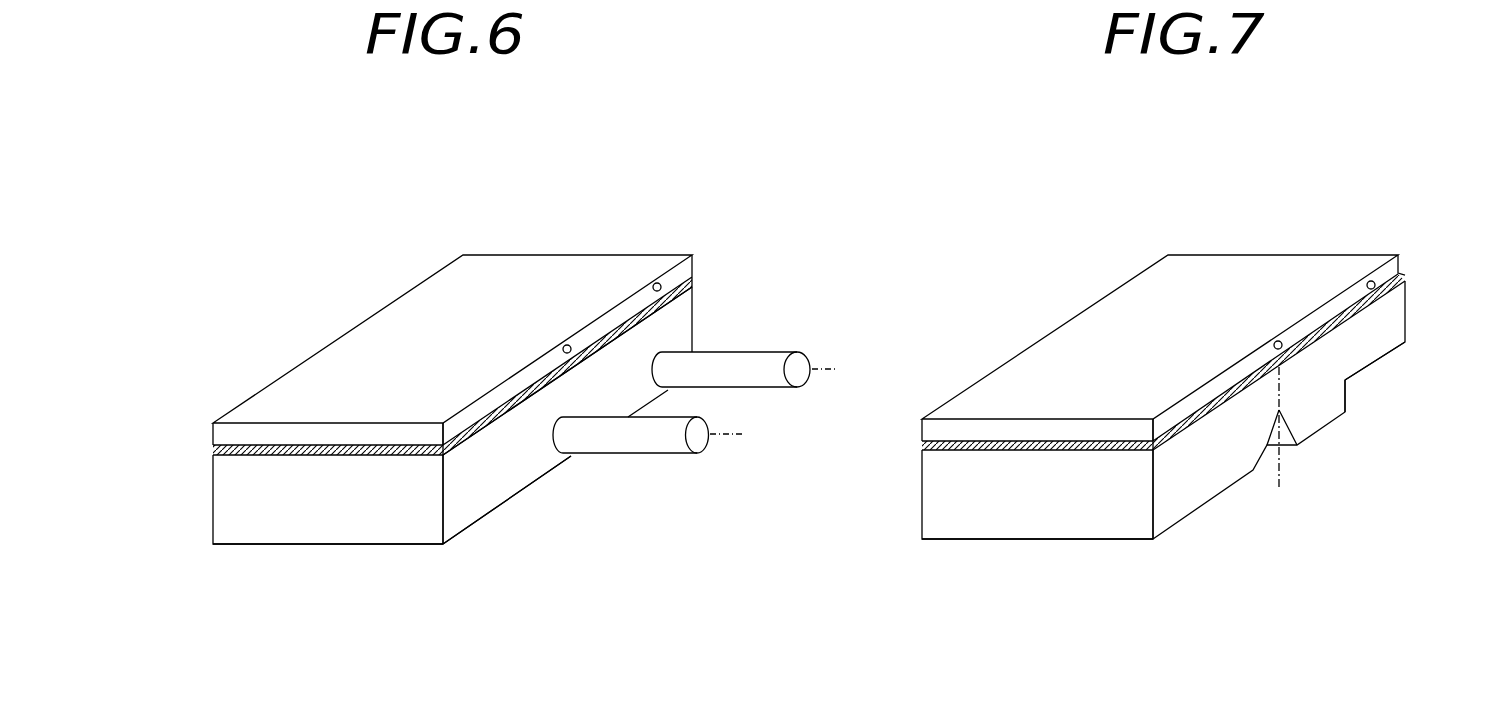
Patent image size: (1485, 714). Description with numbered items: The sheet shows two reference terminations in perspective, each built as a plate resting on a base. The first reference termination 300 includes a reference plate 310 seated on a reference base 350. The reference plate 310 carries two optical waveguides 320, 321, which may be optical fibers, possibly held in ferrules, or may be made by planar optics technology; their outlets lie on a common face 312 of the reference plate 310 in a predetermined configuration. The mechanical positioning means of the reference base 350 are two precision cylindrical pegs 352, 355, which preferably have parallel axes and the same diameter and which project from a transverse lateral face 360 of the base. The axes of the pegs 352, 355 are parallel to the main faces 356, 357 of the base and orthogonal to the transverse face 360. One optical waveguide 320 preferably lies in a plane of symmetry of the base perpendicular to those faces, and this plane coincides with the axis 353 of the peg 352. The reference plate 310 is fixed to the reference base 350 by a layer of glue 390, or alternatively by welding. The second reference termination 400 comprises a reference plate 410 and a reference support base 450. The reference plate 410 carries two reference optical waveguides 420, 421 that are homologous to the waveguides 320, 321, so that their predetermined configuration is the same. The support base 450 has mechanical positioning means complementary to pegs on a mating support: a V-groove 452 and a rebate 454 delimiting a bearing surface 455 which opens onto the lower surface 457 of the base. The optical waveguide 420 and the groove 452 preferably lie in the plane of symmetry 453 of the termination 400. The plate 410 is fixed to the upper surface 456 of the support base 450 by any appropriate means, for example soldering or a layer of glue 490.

In FIG. 6, the reference termination 300 is at (325, 293).
In FIG. 6, the reference plate 310 is at (437, 293).
In FIG. 6, the common face 312 is at (455, 425).
In FIG. 6, the optical waveguide 320 is at (575, 338).
In FIG. 6, the optical waveguide 321 is at (662, 285).
In FIG. 6, the reference base 350 is at (333, 528).
In FIG. 6, the cylindrical peg 352 is at (640, 447).
In FIG. 6, the axis 353 is at (725, 435).
In FIG. 6, the cylindrical peg 355 is at (768, 353).
In FIG. 6, the main face 356 is at (237, 455).
In FIG. 6, the main face 357 is at (243, 546).
In FIG. 6, the transverse lateral face 360 is at (510, 475).
In FIG. 6, the layer of glue 390 is at (409, 455).
In FIG. 7, the reference termination 400 is at (1030, 315).
In FIG. 7, the reference plate 410 is at (1140, 295).
In FIG. 7, the reference optical waveguide 420 is at (1283, 338).
In FIG. 7, the reference optical waveguide 421 is at (1377, 283).
In FIG. 7, the reference support base 450 is at (1070, 525).
In FIG. 7, the V-groove 452 is at (1262, 450).
In FIG. 7, the plane of symmetry 453 is at (1281, 470).
In FIG. 7, the rebate 454 is at (1358, 382).
In FIG. 7, the bearing surface 455 is at (1392, 353).
In FIG. 7, the upper surface 456 is at (922, 449).
In FIG. 7, the lower surface 457 is at (935, 543).
In FIG. 7, the layer of glue 490 is at (1122, 447).